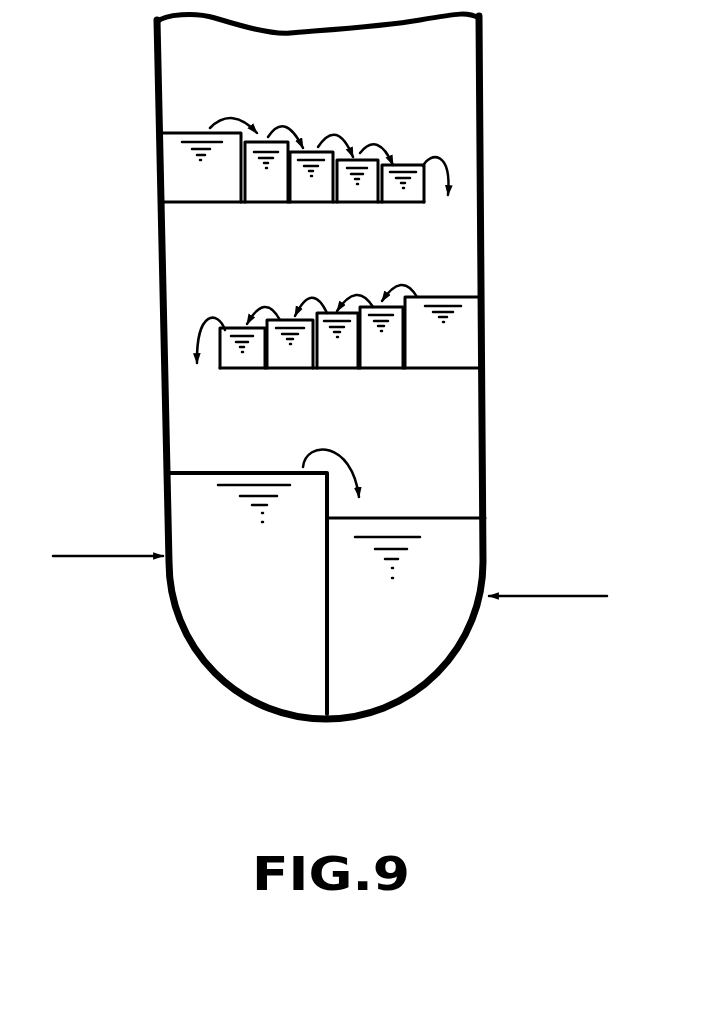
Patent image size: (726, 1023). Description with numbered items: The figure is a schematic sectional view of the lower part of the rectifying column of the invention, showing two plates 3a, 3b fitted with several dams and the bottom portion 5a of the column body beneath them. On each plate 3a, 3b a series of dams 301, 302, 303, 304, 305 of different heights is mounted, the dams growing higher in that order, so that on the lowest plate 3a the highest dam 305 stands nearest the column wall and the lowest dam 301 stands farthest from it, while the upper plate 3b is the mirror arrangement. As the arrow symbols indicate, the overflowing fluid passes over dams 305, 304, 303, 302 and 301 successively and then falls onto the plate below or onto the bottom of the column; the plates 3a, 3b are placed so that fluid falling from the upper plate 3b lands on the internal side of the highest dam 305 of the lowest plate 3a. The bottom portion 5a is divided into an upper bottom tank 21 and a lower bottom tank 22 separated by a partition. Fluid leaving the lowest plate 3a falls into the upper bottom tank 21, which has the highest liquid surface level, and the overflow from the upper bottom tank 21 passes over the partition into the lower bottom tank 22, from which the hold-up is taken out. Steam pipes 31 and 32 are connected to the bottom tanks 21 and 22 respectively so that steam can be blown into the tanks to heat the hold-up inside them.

The bottom portion 5a is at (172, 670).
The lowest plate 3a is at (382, 323).
The plate 3b is at (203, 212).
The dam 301 is at (228, 357).
The dam 302 is at (270, 352).
The dam 303 is at (319, 352).
The dam 304 is at (363, 343).
The dam 305 is at (408, 343).
The upper bottom tank 21 is at (267, 692).
The lower bottom tank 22 is at (433, 667).
The steam pipe 31 is at (105, 556).
The steam pipe 32 is at (563, 596).